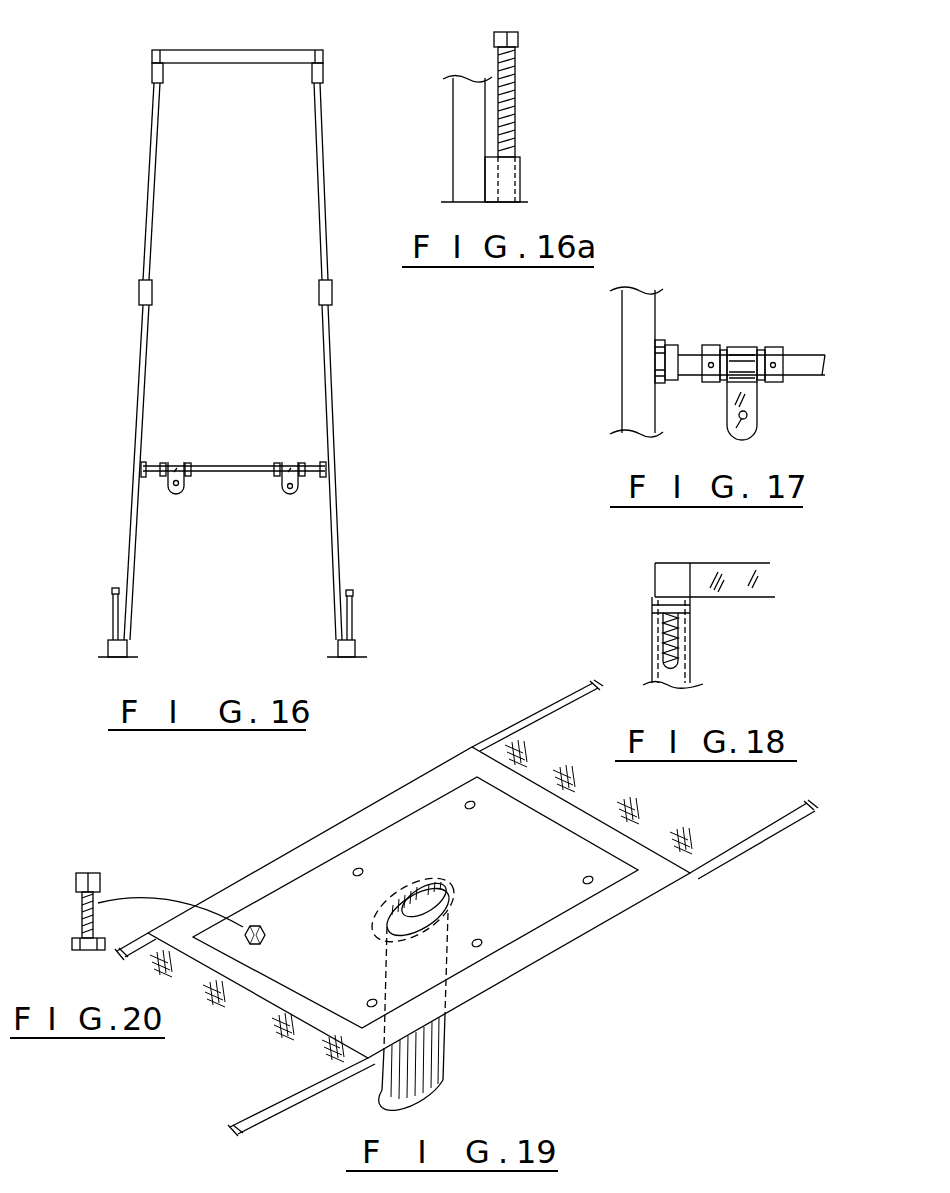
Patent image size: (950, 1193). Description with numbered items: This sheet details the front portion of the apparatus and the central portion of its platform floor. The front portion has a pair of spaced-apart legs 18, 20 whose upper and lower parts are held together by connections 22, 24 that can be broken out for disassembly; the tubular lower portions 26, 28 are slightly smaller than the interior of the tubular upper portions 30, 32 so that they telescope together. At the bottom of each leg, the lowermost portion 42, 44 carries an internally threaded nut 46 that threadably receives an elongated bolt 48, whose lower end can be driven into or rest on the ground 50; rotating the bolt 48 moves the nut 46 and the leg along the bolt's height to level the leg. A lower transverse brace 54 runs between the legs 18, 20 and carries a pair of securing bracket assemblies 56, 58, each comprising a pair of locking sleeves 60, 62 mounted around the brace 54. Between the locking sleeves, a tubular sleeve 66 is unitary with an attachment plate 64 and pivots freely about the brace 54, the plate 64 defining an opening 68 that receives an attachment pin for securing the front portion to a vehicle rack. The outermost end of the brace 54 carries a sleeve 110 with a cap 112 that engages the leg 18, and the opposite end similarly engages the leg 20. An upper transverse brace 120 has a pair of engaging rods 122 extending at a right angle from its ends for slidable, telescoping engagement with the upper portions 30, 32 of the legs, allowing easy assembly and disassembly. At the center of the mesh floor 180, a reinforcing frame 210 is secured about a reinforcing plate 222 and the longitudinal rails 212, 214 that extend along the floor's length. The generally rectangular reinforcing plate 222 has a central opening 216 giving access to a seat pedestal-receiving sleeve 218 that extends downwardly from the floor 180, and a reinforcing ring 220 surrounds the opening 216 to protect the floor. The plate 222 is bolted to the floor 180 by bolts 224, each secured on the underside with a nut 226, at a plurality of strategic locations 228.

In FIG. 16, the leg 18 is at (138, 361).
In FIG. 17, the leg 18 is at (622, 330).
In FIG. 16, the leg 20 is at (335, 361).
In FIG. 16, the connection 22 is at (150, 293).
In FIG. 16, the connection 24 is at (330, 296).
In FIG. 16, the lower portion 26 is at (141, 385).
In FIG. 16, the lower portion 28 is at (334, 378).
In FIG. 16, the upper portion 30 is at (158, 143).
In FIG. 18, the upper portion 30 is at (692, 665).
In FIG. 16, the upper portion 32 is at (316, 160).
In FIG. 16, the lowermost portion 42 is at (130, 622).
In FIG. 16A, the lowermost portion 42 is at (453, 128).
In FIG. 16, the lowermost portion 44 is at (337, 620).
In FIG. 16A, the internally threaded nut 46 is at (520, 182).
In FIG. 16, the elongated bolt 48 is at (112, 610).
In FIG. 16A, the elongated bolt 48 is at (515, 88).
In FIG. 16, the ground 50 is at (98, 657).
In FIG. 16, the lower transverse brace 54 is at (237, 472).
In FIG. 16, the securing bracket assembly 56 is at (176, 494).
In FIG. 16, the securing bracket assembly 58 is at (290, 494).
In FIG. 17, the locking sleeve 60 is at (712, 345).
In FIG. 17, the locking sleeve 62 is at (775, 347).
In FIG. 17, the attachment plate 64 is at (740, 407).
In FIG. 16, the tubular sleeve 66 is at (226, 469).
In FIG. 17, the opening 68 is at (747, 415).
In FIG. 17, the sleeve 110 is at (672, 345).
In FIG. 17, the cap 112 is at (660, 340).
In FIG. 16, the upper transverse brace 120 is at (240, 50).
In FIG. 18, the upper transverse brace 120 is at (744, 597).
In FIG. 18, the engaging rod 122 is at (665, 640).
In FIG. 19, the floor 180 is at (256, 1073).
In FIG. 19, the reinforcing frame 210 is at (572, 810).
In FIG. 19, the longitudinal rail 212 is at (548, 712).
In FIG. 19, the longitudinal rail 214 is at (753, 841).
In FIG. 19, the central opening 216 is at (439, 941).
In FIG. 19, the seat pedestal-receiving sleeve 218 is at (442, 1045).
In FIG. 19, the reinforcing ring 220 is at (436, 892).
In FIG. 19, the reinforcing plate 222 is at (332, 955).
In FIG. 20, the bolt 224 is at (100, 874).
In FIG. 20, the nut 226 is at (72, 945).
In FIG. 19, the strategic location 228 is at (470, 800).